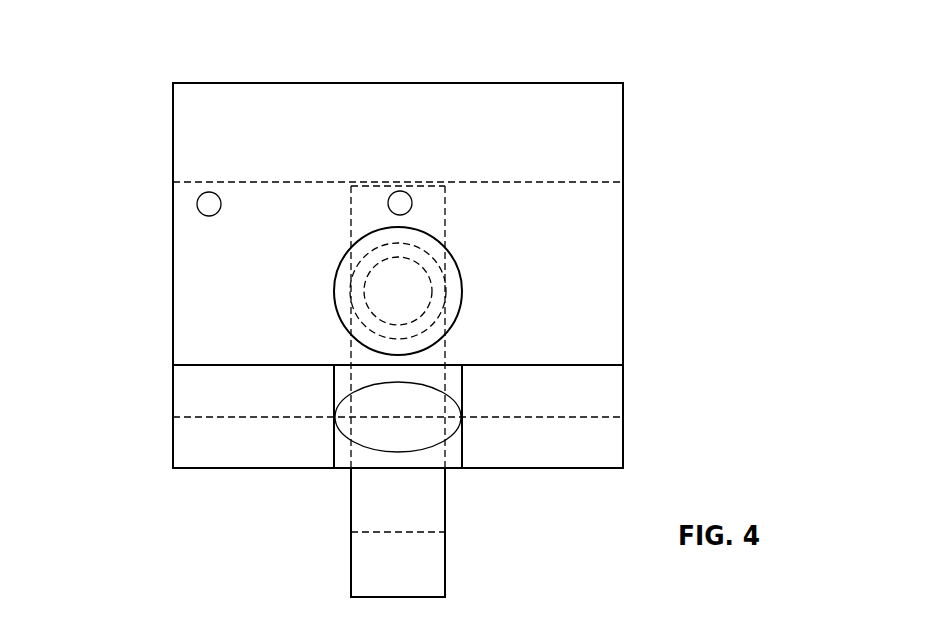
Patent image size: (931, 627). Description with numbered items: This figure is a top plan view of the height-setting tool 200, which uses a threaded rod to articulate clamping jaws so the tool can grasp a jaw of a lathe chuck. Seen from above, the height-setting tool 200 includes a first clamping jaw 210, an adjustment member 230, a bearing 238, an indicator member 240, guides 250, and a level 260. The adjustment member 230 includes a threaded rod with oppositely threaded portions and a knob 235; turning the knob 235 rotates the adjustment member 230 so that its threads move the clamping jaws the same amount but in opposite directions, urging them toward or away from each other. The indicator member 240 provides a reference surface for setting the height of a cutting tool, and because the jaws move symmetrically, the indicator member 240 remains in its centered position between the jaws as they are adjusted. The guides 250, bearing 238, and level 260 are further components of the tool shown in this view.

The height-setting tool 200 is at (650, 64).
The first clamping jaw 210 is at (173, 285).
The adjustment member 230 is at (399, 291).
The knob 235 is at (455, 258).
The bearing 238 is at (438, 264).
The indicator member 240 is at (365, 512).
The guides 250 is at (396, 191).
The level 260 is at (590, 392).